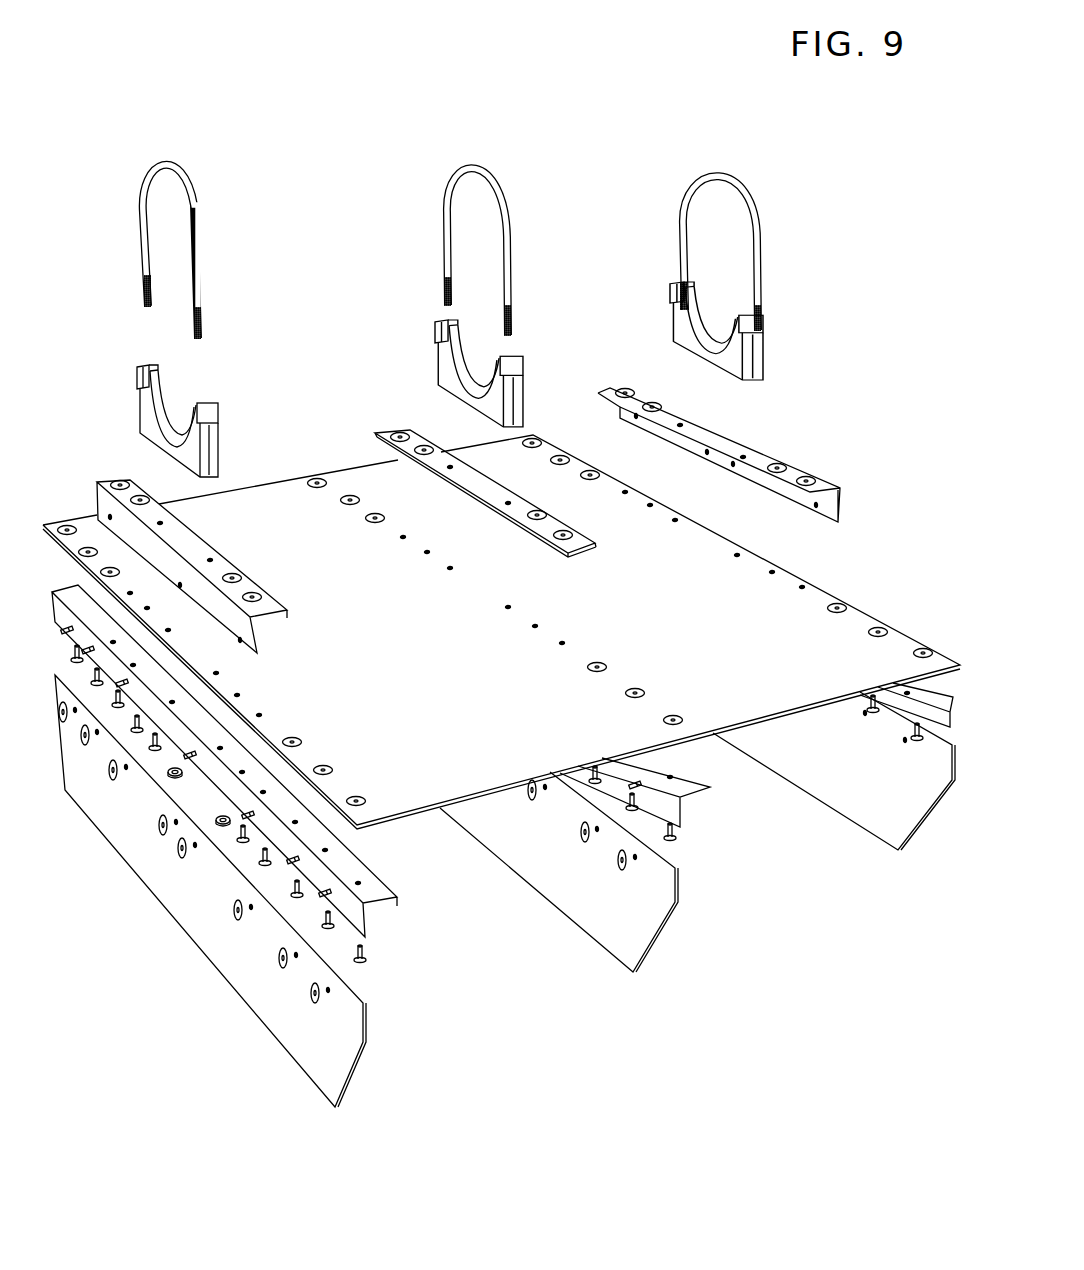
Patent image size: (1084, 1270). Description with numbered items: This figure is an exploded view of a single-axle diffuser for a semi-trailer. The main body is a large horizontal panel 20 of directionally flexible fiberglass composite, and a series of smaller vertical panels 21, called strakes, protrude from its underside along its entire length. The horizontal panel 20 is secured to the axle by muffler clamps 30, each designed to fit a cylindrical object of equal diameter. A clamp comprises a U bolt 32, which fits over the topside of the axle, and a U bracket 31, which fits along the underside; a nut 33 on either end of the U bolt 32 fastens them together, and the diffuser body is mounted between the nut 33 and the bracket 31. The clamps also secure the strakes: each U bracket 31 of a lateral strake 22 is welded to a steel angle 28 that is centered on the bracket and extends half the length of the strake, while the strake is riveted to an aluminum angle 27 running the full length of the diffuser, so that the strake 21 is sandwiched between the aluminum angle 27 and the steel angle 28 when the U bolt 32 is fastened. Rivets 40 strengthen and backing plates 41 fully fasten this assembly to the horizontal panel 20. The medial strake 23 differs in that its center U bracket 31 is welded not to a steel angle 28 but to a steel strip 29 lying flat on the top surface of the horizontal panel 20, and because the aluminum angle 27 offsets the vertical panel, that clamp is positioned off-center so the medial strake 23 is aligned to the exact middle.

The horizontal panel 20 is at (370, 652).
The vertical panel 21 is at (187, 888).
The lateral strake 22 is at (834, 789).
The medial strake 23 is at (559, 890).
The aluminum angle 27 is at (370, 883).
The steel angle 28 is at (792, 477).
The steel strip 29 is at (387, 425).
The muffler clamp 30 is at (716, 278).
The U bracket 31 is at (217, 450).
The U bolt 32 is at (200, 238).
The nut 33 is at (199, 797).
The rivet 40 is at (368, 955).
The backing plate 41 is at (927, 645).